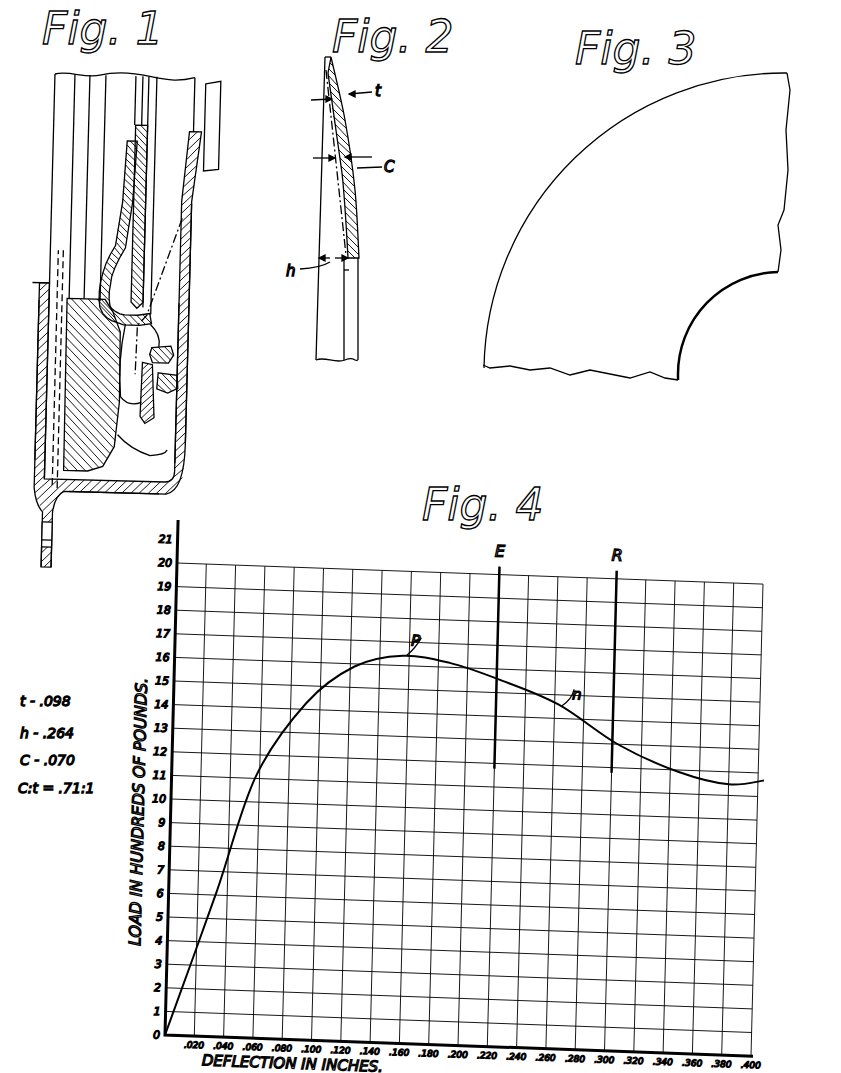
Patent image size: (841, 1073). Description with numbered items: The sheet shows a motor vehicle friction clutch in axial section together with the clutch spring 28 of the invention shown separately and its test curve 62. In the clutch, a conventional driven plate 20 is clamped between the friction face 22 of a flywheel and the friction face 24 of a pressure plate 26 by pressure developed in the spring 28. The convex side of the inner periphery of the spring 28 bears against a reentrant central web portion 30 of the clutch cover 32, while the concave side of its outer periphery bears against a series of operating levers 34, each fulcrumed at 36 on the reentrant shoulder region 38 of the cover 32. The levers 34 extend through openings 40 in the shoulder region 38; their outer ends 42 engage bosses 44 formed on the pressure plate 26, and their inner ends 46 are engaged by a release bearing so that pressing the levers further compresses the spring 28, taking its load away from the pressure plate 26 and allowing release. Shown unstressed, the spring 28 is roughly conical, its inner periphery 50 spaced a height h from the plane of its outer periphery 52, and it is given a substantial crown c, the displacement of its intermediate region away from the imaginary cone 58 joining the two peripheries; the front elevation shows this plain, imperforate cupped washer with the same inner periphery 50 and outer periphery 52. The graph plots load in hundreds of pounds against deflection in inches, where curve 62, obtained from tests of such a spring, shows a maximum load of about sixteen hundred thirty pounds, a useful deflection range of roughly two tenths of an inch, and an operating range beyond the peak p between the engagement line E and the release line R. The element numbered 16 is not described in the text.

In FIG. 1, the sheet metal cup member 16 is at (205, 146).
In FIG. 1, the driven plate 20 is at (66, 494).
In FIG. 1, the friction face 22 is at (49, 450).
In FIG. 1, the friction face 24 is at (125, 480).
In FIG. 1, the pressure plate 26 is at (120, 445).
In FIG. 1, the spring 28 is at (150, 220).
In FIG. 2, the spring 28 is at (359, 207).
In FIG. 3, the spring 28 is at (591, 157).
In FIG. 1, the reentrant central web portion 30 is at (139, 186).
In FIG. 1, the clutch cover 32 is at (189, 462).
In FIG. 1, the operating levers 34 is at (196, 298).
In FIG. 1, the fulcrum 36 is at (181, 350).
In FIG. 1, the reentrant shoulder region 38 is at (186, 380).
In FIG. 1, the openings 40 is at (143, 312).
In FIG. 1, the outer ends 42 is at (164, 410).
In FIG. 1, the bosses 44 is at (160, 440).
In FIG. 1, the inner ends 46 is at (209, 108).
In FIG. 2, the inner periphery 50 is at (355, 265).
In FIG. 3, the inner periphery 50 is at (722, 293).
In FIG. 2, the outer periphery 52 is at (326, 56).
In FIG. 3, the outer periphery 52 is at (551, 175).
In FIG. 2, the imaginary cone 58 is at (338, 183).
In FIG. 4, the curve 62 is at (466, 851).